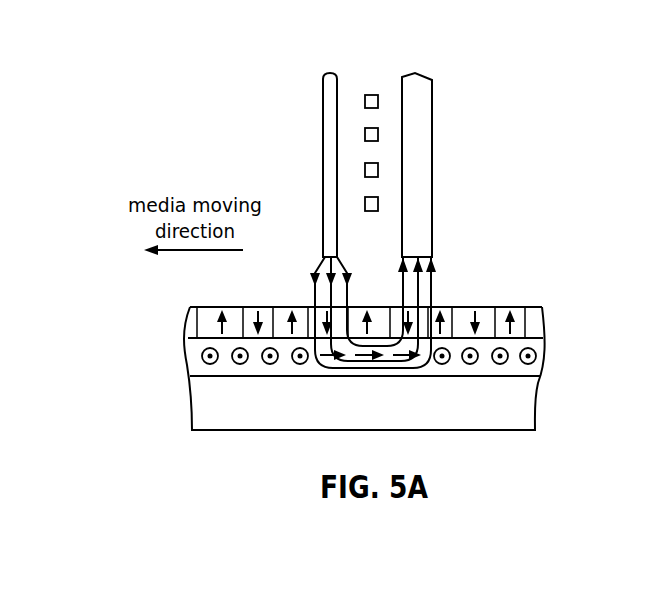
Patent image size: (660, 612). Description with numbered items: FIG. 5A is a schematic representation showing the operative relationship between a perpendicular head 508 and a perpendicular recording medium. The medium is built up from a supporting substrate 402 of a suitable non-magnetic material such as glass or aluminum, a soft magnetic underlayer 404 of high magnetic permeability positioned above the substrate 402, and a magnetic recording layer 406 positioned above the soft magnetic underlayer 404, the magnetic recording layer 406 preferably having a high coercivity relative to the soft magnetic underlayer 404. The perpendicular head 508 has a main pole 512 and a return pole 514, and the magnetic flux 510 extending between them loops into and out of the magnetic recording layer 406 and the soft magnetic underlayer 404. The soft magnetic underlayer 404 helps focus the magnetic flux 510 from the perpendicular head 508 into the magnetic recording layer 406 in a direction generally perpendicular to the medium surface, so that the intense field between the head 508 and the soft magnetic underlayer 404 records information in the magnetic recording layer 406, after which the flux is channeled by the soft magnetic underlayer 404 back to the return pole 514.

The supporting substrate 402 is at (277, 403).
The soft magnetic underlayer 404 is at (538, 345).
The magnetic recording layer 406 is at (537, 316).
The perpendicular head 508 is at (334, 57).
The magnetic flux 510 is at (432, 290).
The main pole 512 is at (330, 157).
The return pole 514 is at (427, 158).